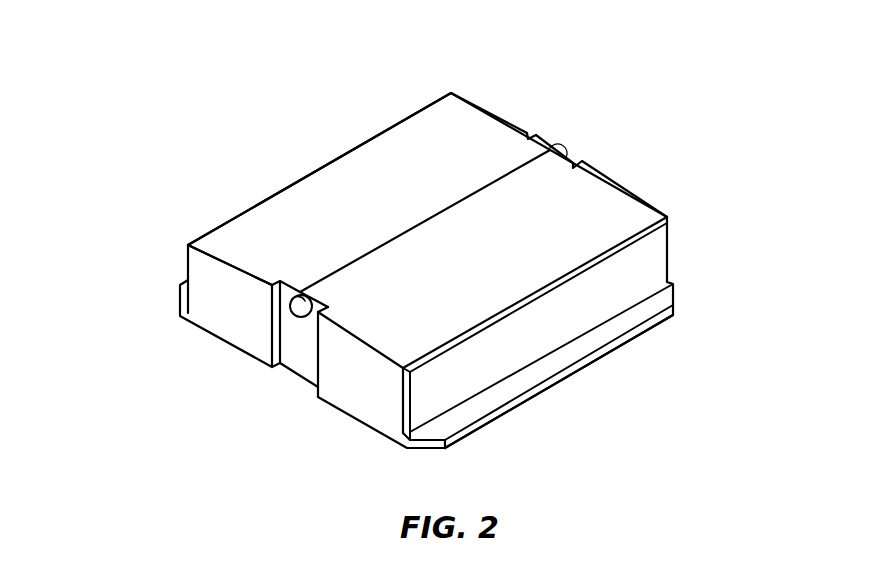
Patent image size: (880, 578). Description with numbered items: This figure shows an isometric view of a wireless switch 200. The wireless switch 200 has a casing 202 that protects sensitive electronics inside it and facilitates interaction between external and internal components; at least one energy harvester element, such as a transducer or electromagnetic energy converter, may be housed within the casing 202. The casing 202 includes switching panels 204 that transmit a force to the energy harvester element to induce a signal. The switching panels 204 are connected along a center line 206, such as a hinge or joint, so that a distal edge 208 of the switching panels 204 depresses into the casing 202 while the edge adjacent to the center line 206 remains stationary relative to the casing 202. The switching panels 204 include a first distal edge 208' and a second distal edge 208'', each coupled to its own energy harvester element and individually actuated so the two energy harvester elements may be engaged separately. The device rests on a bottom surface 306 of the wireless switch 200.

The wireless switch 200 is at (168, 180).
The casing 202 is at (607, 285).
The switching panels 204 is at (435, 137).
The center line 206 is at (505, 170).
The distal edge 208 is at (312, 340).
The first distal edge 208' is at (595, 326).
The second distal edge 208'' is at (247, 185).
The bottom surface 306 is at (580, 365).